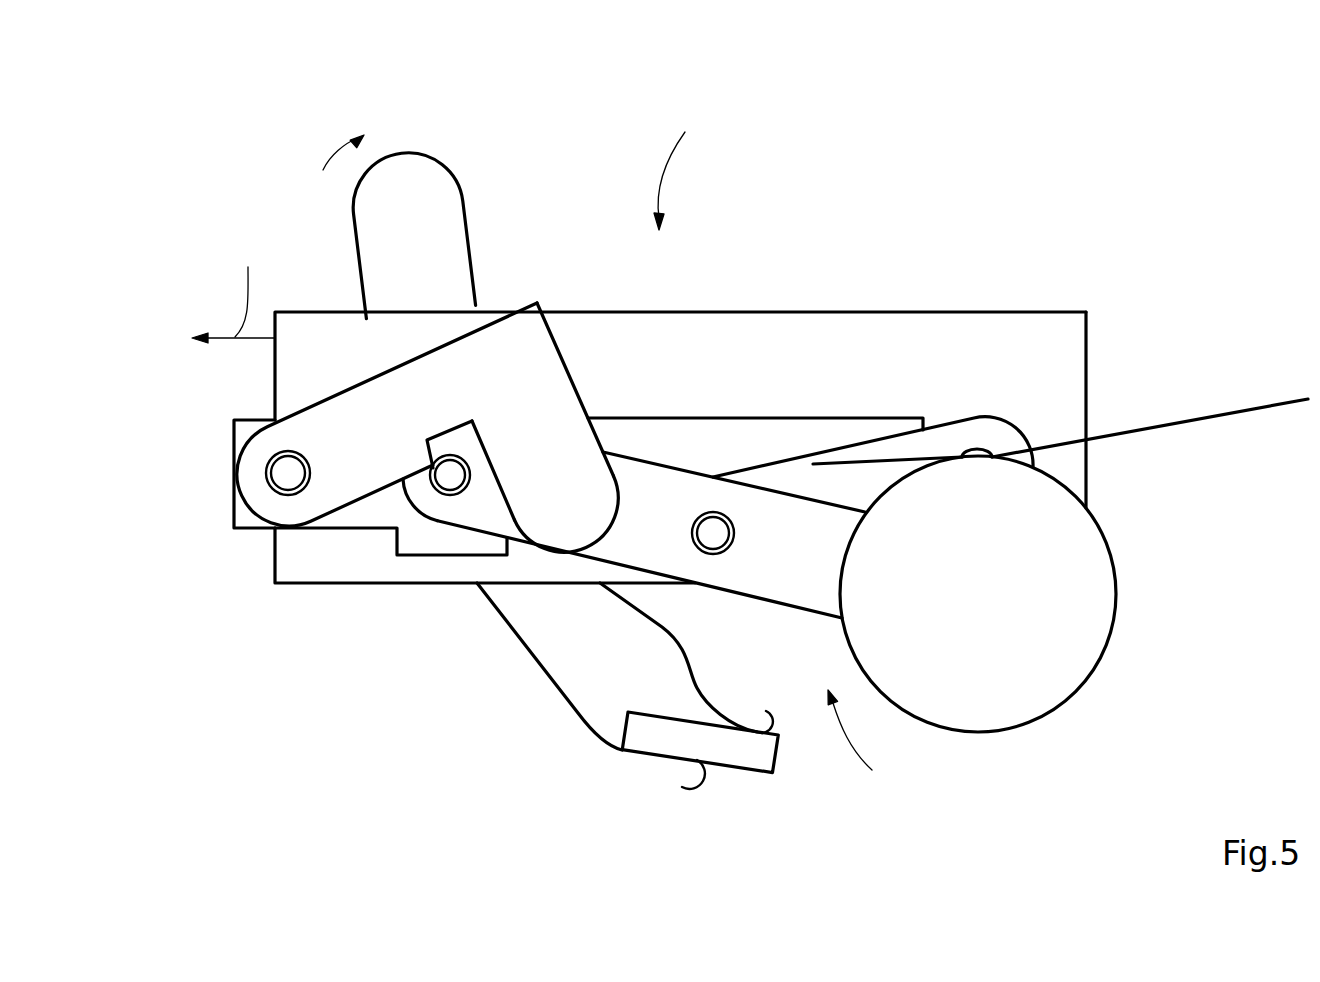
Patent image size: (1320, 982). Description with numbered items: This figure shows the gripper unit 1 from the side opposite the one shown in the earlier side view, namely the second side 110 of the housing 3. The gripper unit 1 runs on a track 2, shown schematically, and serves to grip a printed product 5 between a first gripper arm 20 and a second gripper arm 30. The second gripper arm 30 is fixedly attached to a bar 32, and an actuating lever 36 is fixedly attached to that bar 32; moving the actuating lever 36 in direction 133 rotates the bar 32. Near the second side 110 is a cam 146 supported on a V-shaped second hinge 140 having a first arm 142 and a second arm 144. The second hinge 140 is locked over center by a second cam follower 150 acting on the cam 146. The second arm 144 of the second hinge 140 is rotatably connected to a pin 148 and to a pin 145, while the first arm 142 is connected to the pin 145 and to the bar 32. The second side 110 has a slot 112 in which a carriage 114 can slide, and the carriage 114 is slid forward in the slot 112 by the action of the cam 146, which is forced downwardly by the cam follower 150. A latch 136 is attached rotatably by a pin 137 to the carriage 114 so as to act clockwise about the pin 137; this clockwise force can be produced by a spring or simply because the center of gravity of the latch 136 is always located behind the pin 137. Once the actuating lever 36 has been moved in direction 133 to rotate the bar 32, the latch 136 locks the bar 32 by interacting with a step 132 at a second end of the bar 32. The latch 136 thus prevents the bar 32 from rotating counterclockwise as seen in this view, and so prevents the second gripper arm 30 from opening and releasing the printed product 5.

The gripper unit 1 is at (680, 159).
The track 2 is at (233, 287).
The housing 3 is at (806, 312).
The printed product 5 is at (762, 758).
The first gripper arm 20 is at (560, 703).
The second gripper arm 30 is at (703, 687).
The bar 32 is at (470, 462).
The actuating lever 36 is at (412, 172).
The second side 110 is at (1073, 458).
The slot 112 is at (760, 456).
The carriage 114 is at (367, 513).
The step 132 is at (456, 458).
The direction 133 is at (327, 146).
The latch 136 is at (312, 431).
The pin 137 is at (286, 486).
The second hinge 140 is at (866, 749).
The first arm 142 is at (598, 527).
The second arm 144 is at (945, 430).
The pin 145 is at (713, 512).
The cam 146 is at (995, 705).
The pin 148 is at (977, 452).
The second cam follower 150 is at (1263, 403).